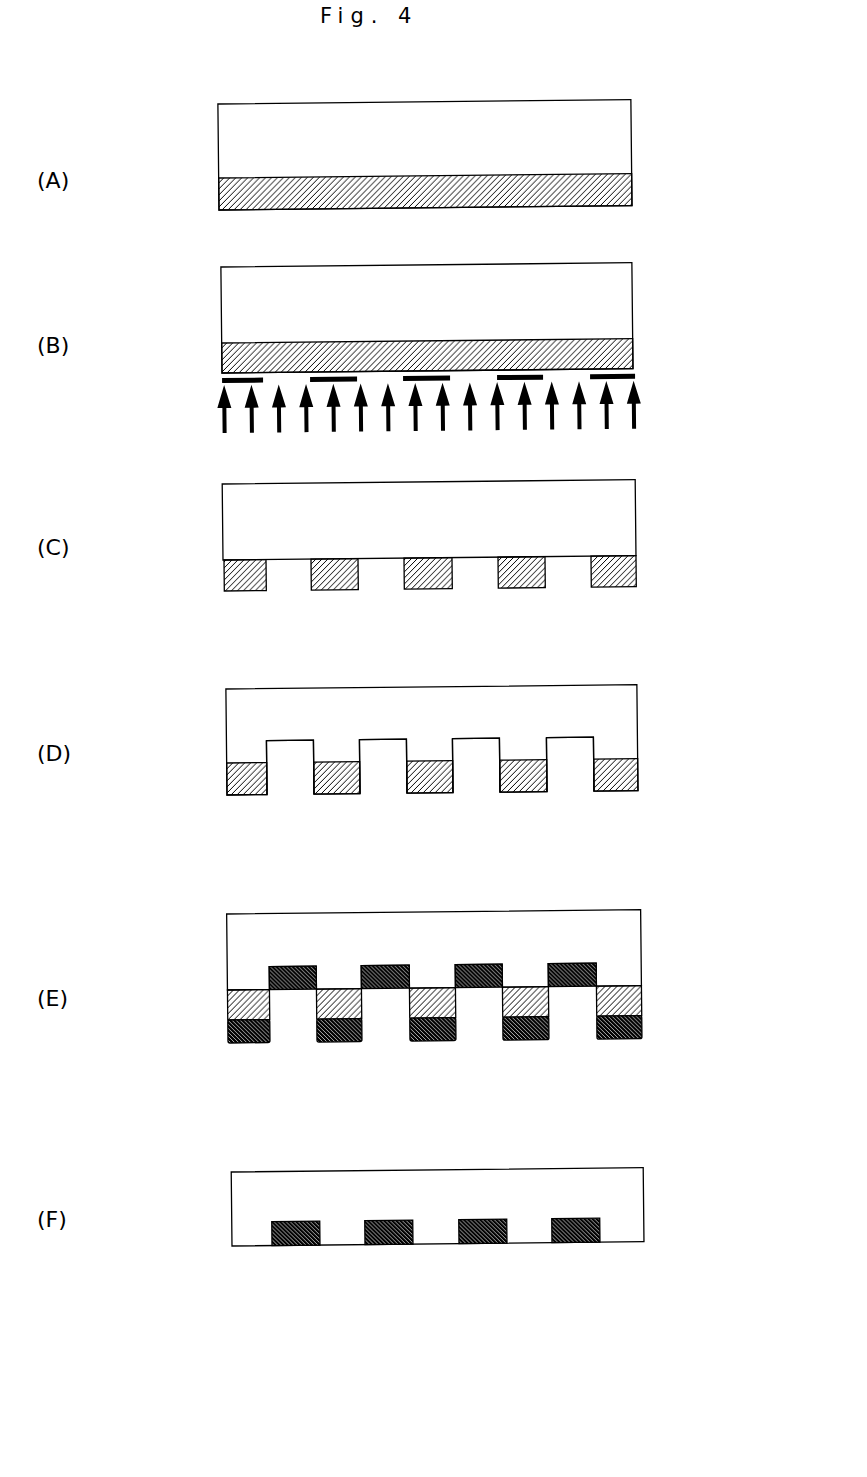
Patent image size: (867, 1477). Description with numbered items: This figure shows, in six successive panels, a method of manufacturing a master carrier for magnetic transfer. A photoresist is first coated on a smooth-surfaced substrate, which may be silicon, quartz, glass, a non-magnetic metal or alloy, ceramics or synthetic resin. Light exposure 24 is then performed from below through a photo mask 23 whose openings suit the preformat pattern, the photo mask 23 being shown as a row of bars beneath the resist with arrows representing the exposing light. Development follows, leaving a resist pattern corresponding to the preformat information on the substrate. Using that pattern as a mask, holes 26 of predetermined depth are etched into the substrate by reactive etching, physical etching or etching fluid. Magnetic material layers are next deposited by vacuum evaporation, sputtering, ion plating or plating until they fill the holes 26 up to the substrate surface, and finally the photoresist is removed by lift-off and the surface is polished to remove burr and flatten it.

The photomask 23 is at (635, 380).
The light exposure 24 is at (643, 420).
The holes 26 is at (477, 748).